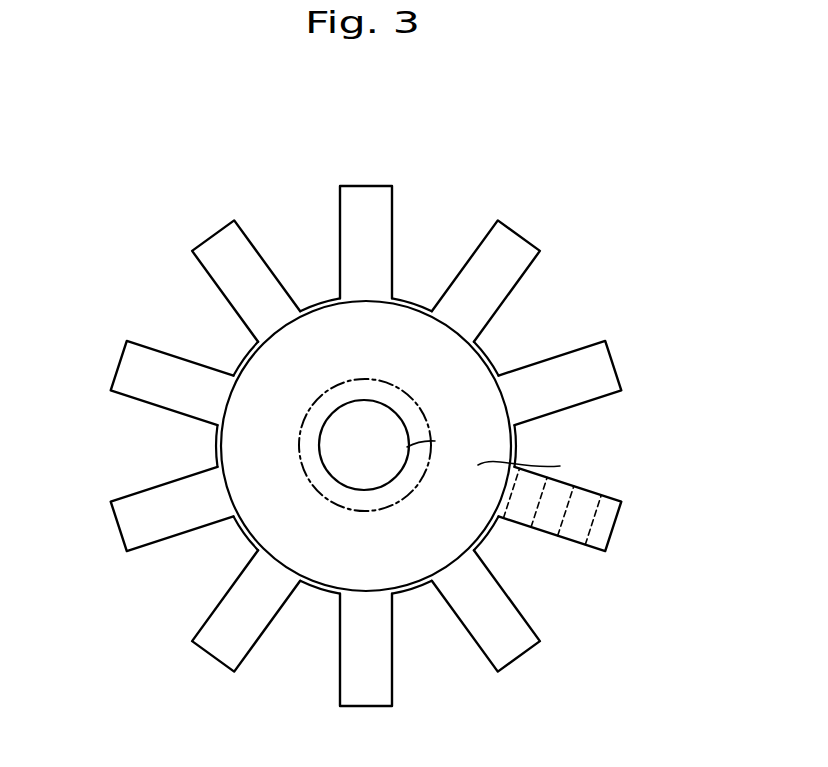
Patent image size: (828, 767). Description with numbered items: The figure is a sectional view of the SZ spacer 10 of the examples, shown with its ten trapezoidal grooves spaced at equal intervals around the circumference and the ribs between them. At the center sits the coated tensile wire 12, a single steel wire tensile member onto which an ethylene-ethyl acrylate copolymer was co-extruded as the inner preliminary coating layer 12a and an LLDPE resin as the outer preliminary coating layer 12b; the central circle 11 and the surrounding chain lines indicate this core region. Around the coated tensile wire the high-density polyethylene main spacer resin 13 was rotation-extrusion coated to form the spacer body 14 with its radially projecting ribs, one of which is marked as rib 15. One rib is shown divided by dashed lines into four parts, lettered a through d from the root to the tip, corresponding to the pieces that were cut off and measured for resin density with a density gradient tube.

The PE spacer 10 is at (423, 453).
The shaft 11 is at (373, 398).
The coated tensile wire 12 is at (517, 445).
The inner preliminary coating layer 12a is at (435, 441).
The outer preliminary coating layer 12b is at (560, 466).
The main spacer resin 13 is at (485, 343).
The rotor core 14 is at (385, 439).
The tooth 15 is at (508, 247).